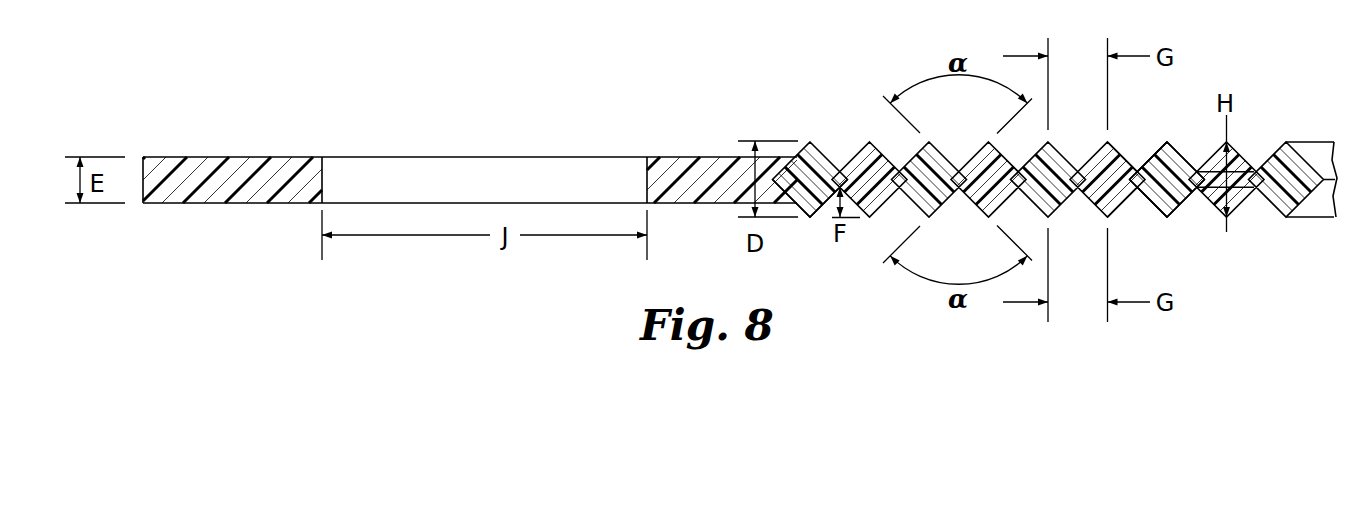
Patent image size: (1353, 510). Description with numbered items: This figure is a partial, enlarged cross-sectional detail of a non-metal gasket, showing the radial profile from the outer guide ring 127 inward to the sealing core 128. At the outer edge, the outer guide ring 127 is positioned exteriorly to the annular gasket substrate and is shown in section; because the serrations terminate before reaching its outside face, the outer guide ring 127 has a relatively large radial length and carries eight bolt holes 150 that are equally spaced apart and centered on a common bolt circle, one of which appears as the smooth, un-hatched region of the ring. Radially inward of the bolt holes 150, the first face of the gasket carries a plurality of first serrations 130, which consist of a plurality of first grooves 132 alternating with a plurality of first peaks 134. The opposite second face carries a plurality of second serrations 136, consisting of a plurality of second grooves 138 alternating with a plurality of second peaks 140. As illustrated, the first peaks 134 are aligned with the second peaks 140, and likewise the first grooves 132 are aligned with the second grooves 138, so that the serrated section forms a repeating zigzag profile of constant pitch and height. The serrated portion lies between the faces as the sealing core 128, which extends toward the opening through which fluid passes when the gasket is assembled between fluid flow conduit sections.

The outer guide ring 127 is at (192, 162).
The bolt holes 150 is at (436, 156).
The plurality of first serrations 130 is at (810, 142).
The plurality of second serrations 136 is at (810, 218).
The plurality of first grooves 132 is at (1137, 171).
The plurality of first peaks 134 is at (1167, 142).
The plurality of second grooves 138 is at (1137, 188).
The plurality of second peaks 140 is at (1167, 218).
The sealing core 128 is at (1254, 181).